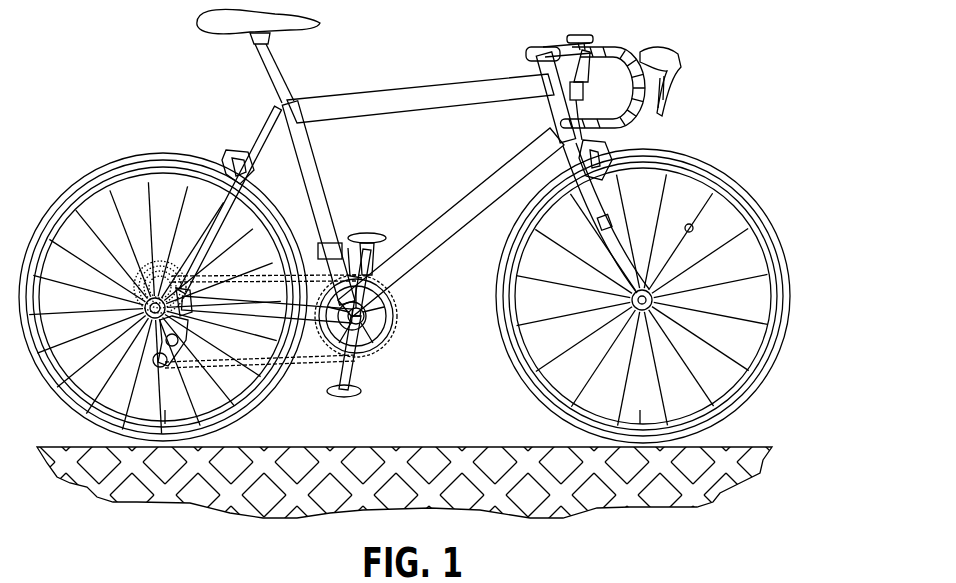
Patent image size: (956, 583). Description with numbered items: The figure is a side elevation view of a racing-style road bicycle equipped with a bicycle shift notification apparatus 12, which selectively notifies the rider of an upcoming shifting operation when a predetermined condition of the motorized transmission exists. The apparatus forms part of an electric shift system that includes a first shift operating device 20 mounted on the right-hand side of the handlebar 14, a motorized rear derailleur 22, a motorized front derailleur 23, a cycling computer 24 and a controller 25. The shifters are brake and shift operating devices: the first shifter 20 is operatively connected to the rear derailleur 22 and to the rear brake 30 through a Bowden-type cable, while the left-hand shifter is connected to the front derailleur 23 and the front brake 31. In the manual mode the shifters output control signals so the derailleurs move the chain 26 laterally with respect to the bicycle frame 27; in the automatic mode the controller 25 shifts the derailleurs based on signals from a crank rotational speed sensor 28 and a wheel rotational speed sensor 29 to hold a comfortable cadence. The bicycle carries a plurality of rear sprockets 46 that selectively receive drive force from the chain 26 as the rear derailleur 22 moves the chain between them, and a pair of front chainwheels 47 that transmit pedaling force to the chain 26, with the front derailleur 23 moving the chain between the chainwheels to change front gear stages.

The bicycle shift notification apparatus 12 is at (652, 42).
The handlebar 14 is at (586, 60).
The first shift operating device 20 is at (680, 52).
The motorized rear derailleur 22 is at (165, 378).
The motorized front derailleur 23 is at (355, 263).
The cycling computer 24 is at (578, 34).
The controller 25 is at (585, 88).
The chain 26 is at (309, 366).
The bicycle frame 27 is at (407, 120).
The crank rotational speed sensor 28 is at (293, 324).
The wheel rotational speed sensor 29 is at (610, 222).
The rear brake 30 is at (236, 156).
The front brake 31 is at (603, 136).
The rear sprockets 46 is at (132, 272).
The front chainwheels 47 is at (400, 307).